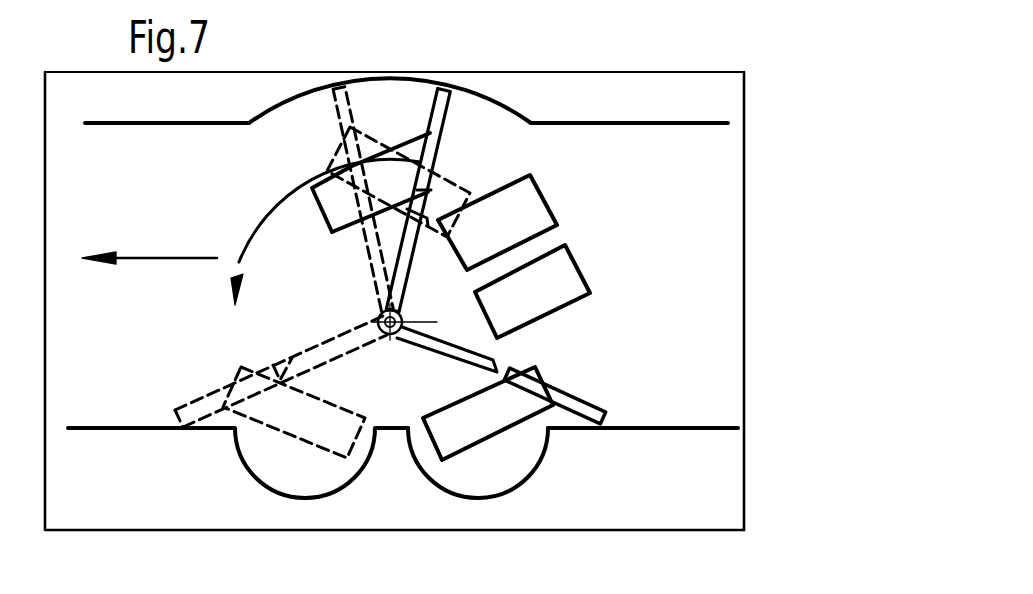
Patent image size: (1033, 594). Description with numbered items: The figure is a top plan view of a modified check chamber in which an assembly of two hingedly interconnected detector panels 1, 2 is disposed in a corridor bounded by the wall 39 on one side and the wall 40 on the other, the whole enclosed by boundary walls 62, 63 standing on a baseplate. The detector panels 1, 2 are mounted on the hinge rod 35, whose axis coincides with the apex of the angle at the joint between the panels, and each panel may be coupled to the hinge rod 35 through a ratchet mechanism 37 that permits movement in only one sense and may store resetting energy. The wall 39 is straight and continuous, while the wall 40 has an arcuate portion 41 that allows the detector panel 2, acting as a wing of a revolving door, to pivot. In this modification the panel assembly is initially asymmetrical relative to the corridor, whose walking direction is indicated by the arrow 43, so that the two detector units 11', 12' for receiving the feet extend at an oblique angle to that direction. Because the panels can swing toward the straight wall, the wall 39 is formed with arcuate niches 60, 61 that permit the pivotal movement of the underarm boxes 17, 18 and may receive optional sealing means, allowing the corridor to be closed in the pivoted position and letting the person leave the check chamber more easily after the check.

The detector panel 1 is at (523, 380).
The detector panel 2 is at (440, 156).
The detector unit 11' is at (574, 222).
The detector unit 12' is at (593, 280).
The underarm box 17 is at (487, 418).
The underarm box 18 is at (415, 150).
The hinge rod 35 is at (382, 333).
The ratchet mechanism 37 is at (397, 340).
The wall 39 is at (643, 429).
The wall 40 is at (583, 123).
The arcuate portion 41 is at (487, 95).
The arrow 43 is at (165, 259).
The arcuate niche 60 is at (294, 498).
The arcuate niche 61 is at (490, 498).
The boundary wall 62 is at (45, 327).
The boundary wall 63 is at (744, 315).